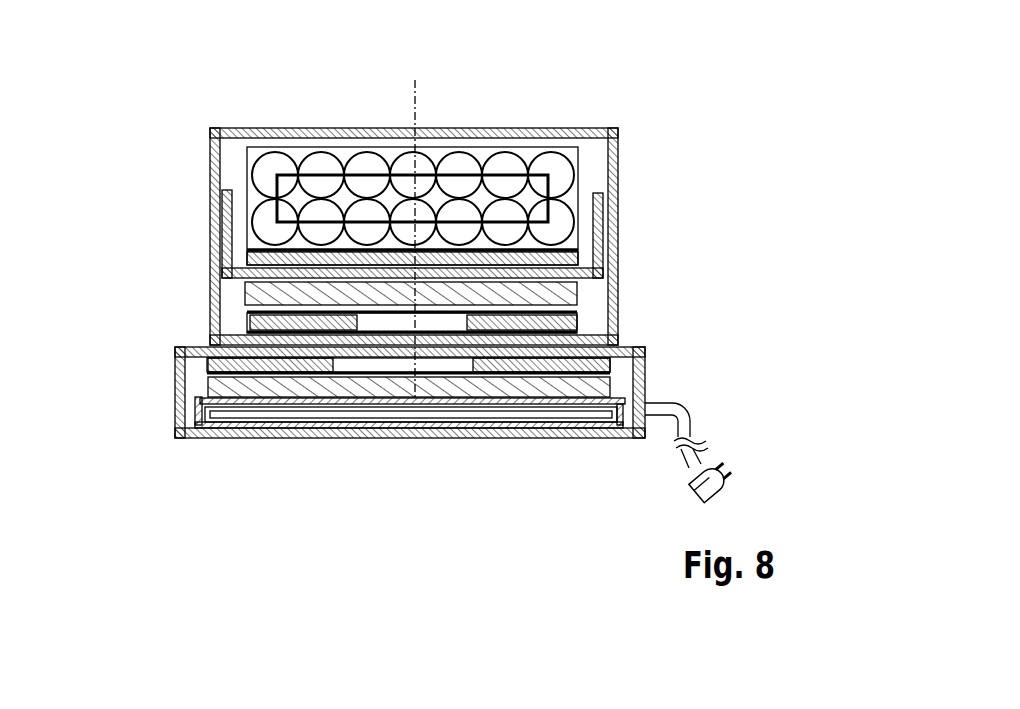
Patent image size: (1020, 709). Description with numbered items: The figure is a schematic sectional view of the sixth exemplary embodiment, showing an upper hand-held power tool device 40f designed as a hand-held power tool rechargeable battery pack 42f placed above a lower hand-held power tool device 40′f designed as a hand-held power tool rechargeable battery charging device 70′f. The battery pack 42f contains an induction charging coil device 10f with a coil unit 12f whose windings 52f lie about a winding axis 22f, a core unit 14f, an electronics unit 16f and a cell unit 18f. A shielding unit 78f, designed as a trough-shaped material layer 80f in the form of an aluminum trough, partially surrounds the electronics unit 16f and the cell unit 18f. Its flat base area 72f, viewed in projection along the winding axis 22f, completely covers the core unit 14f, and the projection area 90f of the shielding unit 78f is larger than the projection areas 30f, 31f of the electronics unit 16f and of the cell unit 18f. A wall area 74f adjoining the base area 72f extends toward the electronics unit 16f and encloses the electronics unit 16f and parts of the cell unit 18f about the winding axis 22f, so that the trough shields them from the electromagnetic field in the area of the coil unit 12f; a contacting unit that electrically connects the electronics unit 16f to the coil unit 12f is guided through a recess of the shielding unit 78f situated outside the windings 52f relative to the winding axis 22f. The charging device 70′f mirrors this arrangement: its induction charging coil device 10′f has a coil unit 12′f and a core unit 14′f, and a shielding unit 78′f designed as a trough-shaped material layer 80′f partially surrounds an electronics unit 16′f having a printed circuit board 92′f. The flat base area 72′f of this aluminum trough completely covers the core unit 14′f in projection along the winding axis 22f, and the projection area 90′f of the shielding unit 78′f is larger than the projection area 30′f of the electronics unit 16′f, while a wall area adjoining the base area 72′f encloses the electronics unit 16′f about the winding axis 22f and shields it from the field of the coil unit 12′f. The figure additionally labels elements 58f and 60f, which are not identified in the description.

The hand-held power tool device 40f is at (584, 75).
The hand-held power tool rechargeable battery pack 42f is at (602, 122).
The induction charging coil device 10f is at (625, 268).
The cell unit 18f is at (573, 163).
The shielding unit 78f is at (598, 216).
The wall area 74f is at (597, 245).
The base area 72f is at (548, 295).
The projection area of shielding unit 90f is at (303, 322).
The coil unit 12f is at (580, 325).
The projection area of electronics unit 30f is at (445, 290).
The winding axis 22f is at (420, 107).
The projection area of cell unit 31f is at (275, 250).
The electronics unit 16f is at (312, 268).
The trough-shaped material layer 80f is at (230, 272).
The core unit 14f is at (252, 290).
The heat conducting layer 58f is at (252, 318).
The connecting lines 60f is at (502, 318).
The windings 52f is at (535, 475).
The hand-held power tool device 40′f is at (157, 418).
The induction charging coil device 10′f is at (625, 387).
The coil unit 12′f is at (605, 372).
The base area 72′f is at (237, 383).
The projection area of shielding unit 90′f is at (541, 365).
The trough-shaped material layer 80′f is at (217, 404).
The shielding unit 78′f is at (190, 433).
The electronics unit 16′f is at (217, 418).
The core unit 14′f is at (253, 383).
The projection area of electronics unit 30′f is at (622, 418).
The printed circuit board 92′f is at (360, 412).
The hand-held power tool rechargeable battery charging device 70′f is at (638, 448).